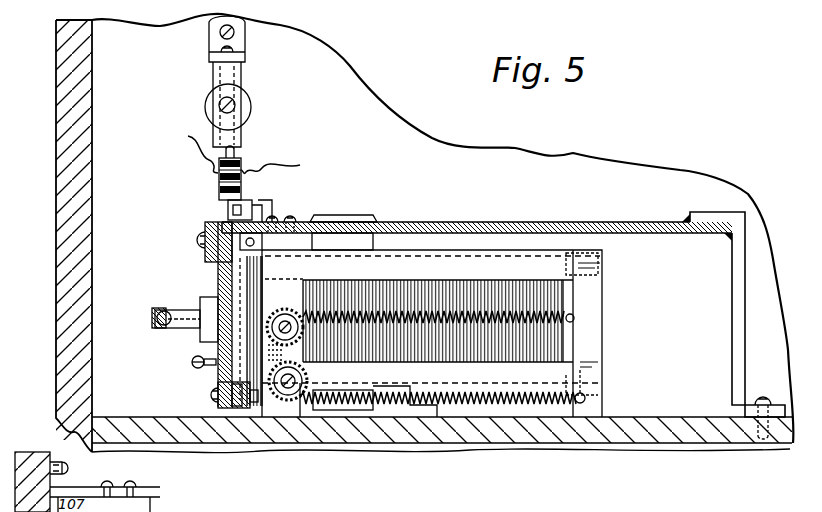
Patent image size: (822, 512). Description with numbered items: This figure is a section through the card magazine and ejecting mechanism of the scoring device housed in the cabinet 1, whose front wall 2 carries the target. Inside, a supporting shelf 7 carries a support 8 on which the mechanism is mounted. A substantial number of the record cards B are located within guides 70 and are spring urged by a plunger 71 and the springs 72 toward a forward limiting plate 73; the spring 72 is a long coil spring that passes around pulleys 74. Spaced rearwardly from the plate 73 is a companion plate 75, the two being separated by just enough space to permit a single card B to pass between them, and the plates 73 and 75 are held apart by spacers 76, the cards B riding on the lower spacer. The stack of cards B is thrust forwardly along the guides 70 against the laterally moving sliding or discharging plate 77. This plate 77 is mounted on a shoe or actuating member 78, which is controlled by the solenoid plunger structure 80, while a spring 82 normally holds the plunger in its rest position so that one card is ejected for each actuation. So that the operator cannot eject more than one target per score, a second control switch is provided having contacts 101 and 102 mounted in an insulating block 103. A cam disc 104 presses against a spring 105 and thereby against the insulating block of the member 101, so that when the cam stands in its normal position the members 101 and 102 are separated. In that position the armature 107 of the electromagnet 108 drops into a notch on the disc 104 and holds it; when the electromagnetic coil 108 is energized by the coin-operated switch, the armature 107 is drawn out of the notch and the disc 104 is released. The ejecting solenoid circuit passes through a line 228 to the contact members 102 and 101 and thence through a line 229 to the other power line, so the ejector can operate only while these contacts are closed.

The cabinet 1 is at (357, 73).
The front wall 2 is at (56, 132).
The supporting shelf 7 is at (628, 438).
The support 8 is at (577, 222).
The guides 70 is at (462, 250).
The plunger 71 is at (565, 343).
The springs 72 is at (483, 396).
The forward limiting plate 73 is at (222, 376).
The pulleys 74 is at (281, 318).
The companion plate 75 is at (238, 406).
The spacers 76 is at (212, 250).
The sliding or discharging plate 77 is at (240, 272).
The shoe or actuating member 78 is at (205, 312).
The solenoid plunger structure 80 is at (156, 323).
The spring 82 is at (192, 362).
The contact 101 is at (219, 173).
The contact 102 is at (241, 178).
The insulating block 103 is at (241, 166).
The cam disc 104 is at (228, 209).
The spring 105 is at (222, 188).
The armature 107 is at (241, 148).
The electromagnet 108 is at (252, 108).
The line 228 is at (289, 162).
The line 229 is at (187, 148).
The card B is at (412, 290).